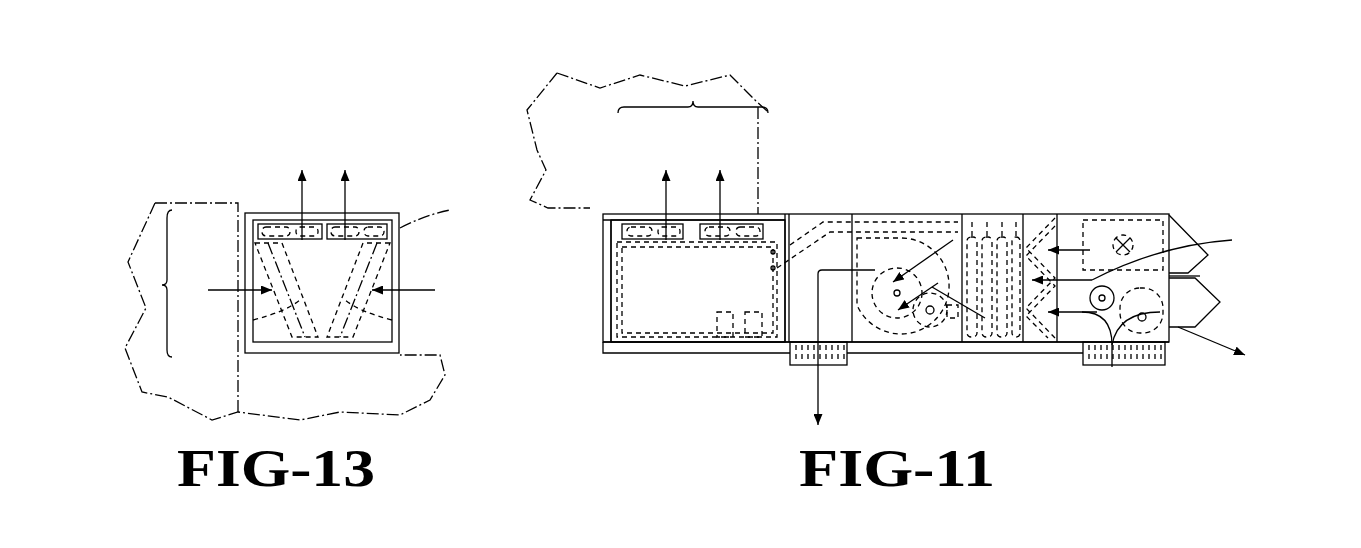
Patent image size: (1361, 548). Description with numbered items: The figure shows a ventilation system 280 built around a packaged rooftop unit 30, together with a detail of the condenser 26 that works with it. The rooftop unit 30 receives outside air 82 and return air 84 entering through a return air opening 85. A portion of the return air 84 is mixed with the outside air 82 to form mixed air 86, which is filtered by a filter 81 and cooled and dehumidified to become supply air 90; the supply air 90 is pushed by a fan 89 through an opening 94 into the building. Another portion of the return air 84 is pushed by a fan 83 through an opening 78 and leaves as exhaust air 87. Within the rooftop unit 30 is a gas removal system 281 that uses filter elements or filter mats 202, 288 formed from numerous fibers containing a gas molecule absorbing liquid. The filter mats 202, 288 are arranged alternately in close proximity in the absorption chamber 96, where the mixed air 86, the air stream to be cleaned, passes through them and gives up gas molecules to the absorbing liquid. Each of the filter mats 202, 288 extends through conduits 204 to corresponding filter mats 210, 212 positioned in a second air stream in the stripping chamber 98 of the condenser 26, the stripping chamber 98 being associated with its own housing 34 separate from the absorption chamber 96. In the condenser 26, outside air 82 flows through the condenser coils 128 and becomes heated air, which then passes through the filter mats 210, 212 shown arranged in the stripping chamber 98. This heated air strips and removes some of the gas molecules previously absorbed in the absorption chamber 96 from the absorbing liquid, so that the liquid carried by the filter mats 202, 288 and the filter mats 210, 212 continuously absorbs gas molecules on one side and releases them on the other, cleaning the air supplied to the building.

In FIG. 13, the condenser 26 is at (160, 283).
In FIG. 11, the condenser 26 is at (693, 103).
In FIG. 11, the rooftop unit 30 is at (795, 212).
In FIG. 11, the housing 34 is at (603, 325).
In FIG. 11, the opening 78 is at (1222, 303).
In FIG. 11, the filter 81 is at (1040, 226).
In FIG. 13, the outside air 82 is at (236, 290).
In FIG. 11, the outside air 82 is at (1090, 250).
In FIG. 11, the fan 83 is at (1178, 323).
In FIG. 11, the return air 84 is at (1112, 370).
In FIG. 11, the return air opening 85 is at (1163, 365).
In FIG. 11, the mixed air 86 is at (1177, 255).
In FIG. 11, the exhaust air 87 is at (1215, 340).
In FIG. 11, the fan 89 is at (873, 335).
In FIG. 11, the supply air 90 is at (813, 400).
In FIG. 11, the opening 94 is at (790, 355).
In FIG. 11, the absorption chamber 96 is at (927, 236).
In FIG. 13, the stripping chamber 98 is at (323, 272).
In FIG. 11, the stripping chamber 98 is at (648, 312).
In FIG. 13, the condenser coils 128 is at (306, 335).
In FIG. 11, the condenser coils 128 is at (617, 283).
In FIG. 11, the filter mat 202 is at (987, 345).
In FIG. 11, the conduits 204 is at (776, 252).
In FIG. 13, the filter mat 210 is at (265, 224).
In FIG. 11, the filter mat 210 is at (695, 332).
In FIG. 13, the filter mat 212 is at (247, 323).
In FIG. 13, the ventilation system 280 is at (212, 182).
In FIG. 11, the ventilation system 280 is at (1200, 180).
In FIG. 11, the gas removal system 281 is at (918, 150).
In FIG. 11, the filter mat 288 is at (972, 238).